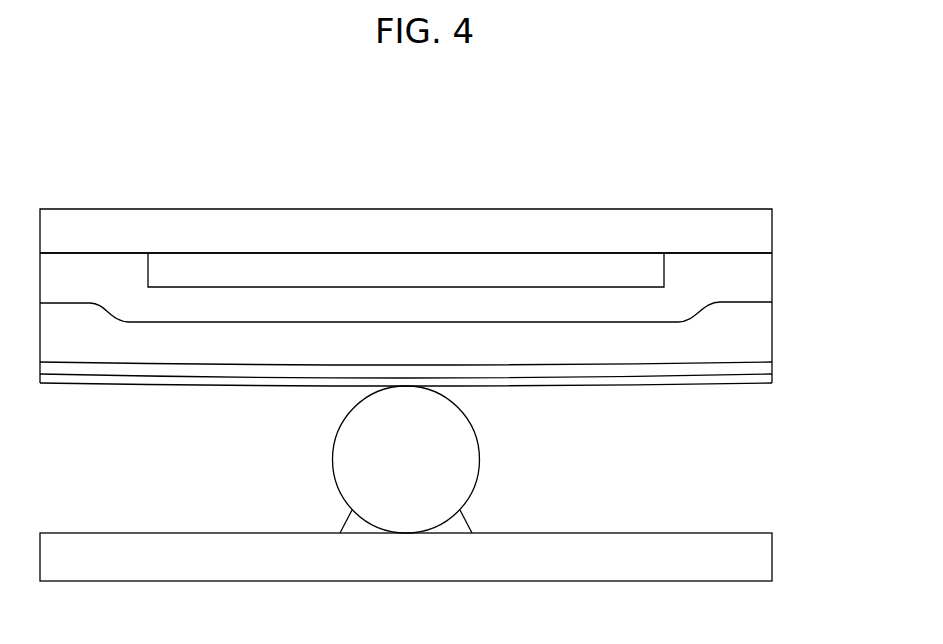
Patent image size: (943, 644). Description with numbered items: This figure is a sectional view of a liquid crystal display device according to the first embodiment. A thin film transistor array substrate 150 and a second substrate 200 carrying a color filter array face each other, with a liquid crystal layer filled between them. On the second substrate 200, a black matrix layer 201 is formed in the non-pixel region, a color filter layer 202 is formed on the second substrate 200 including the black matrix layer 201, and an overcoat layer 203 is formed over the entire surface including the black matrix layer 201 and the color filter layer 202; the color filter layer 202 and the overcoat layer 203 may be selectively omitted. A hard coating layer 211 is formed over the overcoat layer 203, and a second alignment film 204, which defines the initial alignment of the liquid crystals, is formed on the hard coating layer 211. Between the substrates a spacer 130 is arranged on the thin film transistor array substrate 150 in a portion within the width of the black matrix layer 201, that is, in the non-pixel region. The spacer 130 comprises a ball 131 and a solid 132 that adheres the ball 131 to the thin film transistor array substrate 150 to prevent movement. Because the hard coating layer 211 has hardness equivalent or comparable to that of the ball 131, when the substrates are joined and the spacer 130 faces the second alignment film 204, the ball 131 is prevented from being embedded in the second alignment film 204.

The second substrate 200 is at (763, 231).
The black matrix layer 201 is at (425, 267).
The color filter layer 202 is at (763, 274).
The overcoat layer 203 is at (763, 317).
The second alignment film 204 is at (772, 383).
The hard coating layer 211 is at (762, 368).
The spacer 130 is at (327, 459).
The ball 131 is at (350, 443).
The solid 132 is at (357, 526).
The thin film transistor array substrate 150 is at (763, 556).